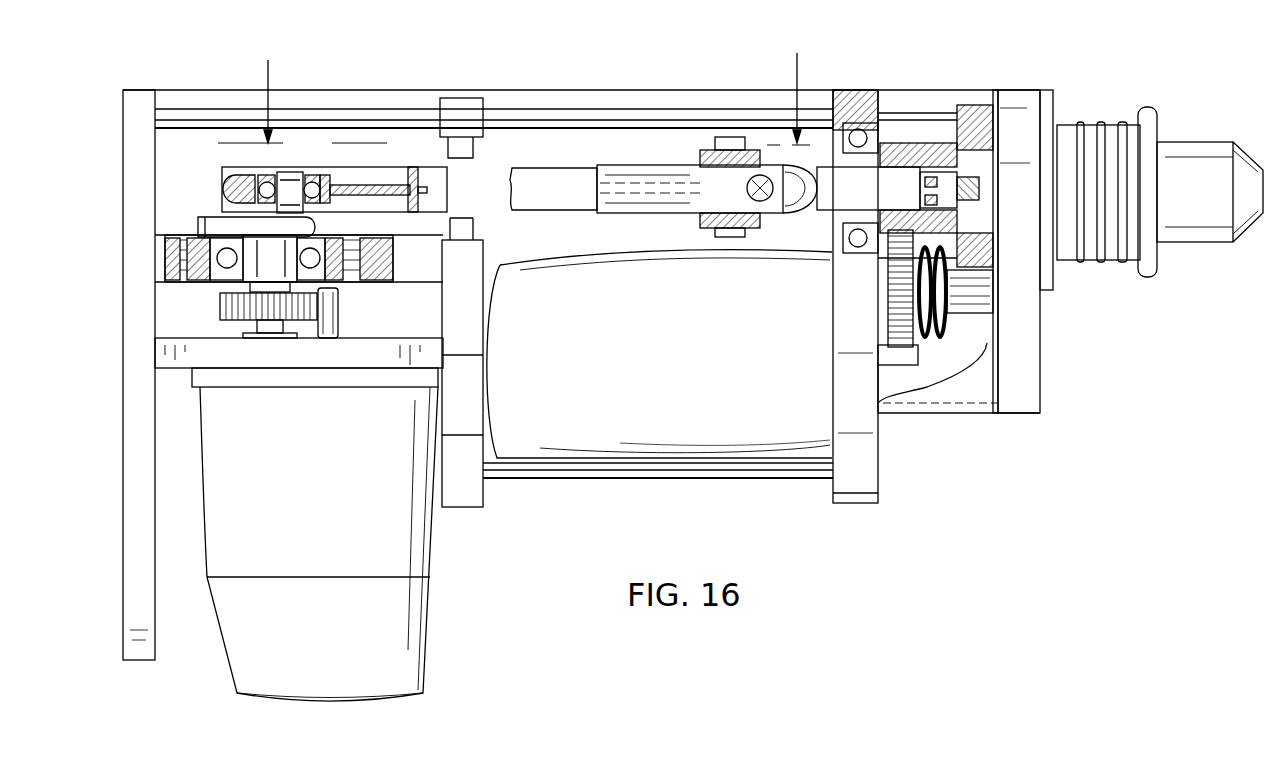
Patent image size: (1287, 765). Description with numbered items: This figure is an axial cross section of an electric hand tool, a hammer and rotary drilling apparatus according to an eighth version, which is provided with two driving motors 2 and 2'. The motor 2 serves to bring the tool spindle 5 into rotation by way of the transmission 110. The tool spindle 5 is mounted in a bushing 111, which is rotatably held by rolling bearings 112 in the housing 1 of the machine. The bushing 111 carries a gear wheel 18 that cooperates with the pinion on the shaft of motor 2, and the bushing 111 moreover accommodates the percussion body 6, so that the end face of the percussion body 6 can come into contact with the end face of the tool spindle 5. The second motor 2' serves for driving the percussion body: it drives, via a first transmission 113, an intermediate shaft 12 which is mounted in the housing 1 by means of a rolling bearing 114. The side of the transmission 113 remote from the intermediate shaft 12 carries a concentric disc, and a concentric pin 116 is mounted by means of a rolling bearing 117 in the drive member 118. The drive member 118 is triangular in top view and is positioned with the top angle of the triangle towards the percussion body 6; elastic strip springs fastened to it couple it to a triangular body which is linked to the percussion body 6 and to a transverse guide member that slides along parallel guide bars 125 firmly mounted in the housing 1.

The housing 1 is at (670, 92).
The guide bars 125 is at (597, 127).
The drive member 118 is at (238, 175).
The rolling bearing 117 is at (267, 177).
The concentric pin 116 is at (288, 180).
The rolling bearing 114 is at (225, 268).
The intermediate shaft 12 is at (265, 253).
The first transmission 113 is at (220, 310).
The percussion body 6 is at (847, 187).
The rolling bearings 112 is at (877, 127).
The bushing 111 is at (923, 150).
The gear wheel 18 is at (960, 108).
The tool spindle 5 is at (973, 187).
The transmission 110 is at (975, 297).
The driving motor 2 is at (659, 388).
The driving motor 2' is at (337, 534).